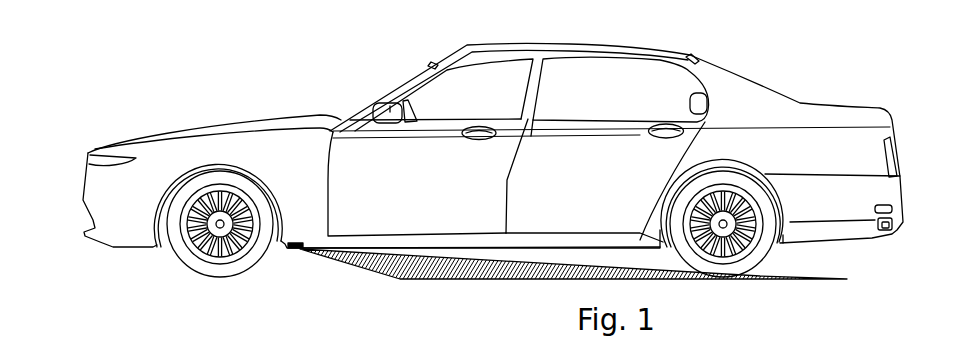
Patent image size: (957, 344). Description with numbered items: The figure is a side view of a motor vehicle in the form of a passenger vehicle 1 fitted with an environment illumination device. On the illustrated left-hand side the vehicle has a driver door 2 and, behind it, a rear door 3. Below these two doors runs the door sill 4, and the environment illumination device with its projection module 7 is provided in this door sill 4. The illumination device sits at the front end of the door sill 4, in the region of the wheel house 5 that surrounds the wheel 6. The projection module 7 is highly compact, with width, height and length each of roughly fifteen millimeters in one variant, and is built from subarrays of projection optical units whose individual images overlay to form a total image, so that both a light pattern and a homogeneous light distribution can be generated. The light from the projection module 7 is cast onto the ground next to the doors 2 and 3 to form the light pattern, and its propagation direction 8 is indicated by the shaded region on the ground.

The passenger vehicle 1 is at (786, 72).
The driver door 2 is at (436, 147).
The rear door 3 is at (571, 148).
The door sill 4 is at (371, 245).
The wheel house 5 is at (217, 162).
The wheel 6 is at (208, 279).
The projection module 7 is at (313, 242).
The propagation direction of the light 8 is at (343, 266).